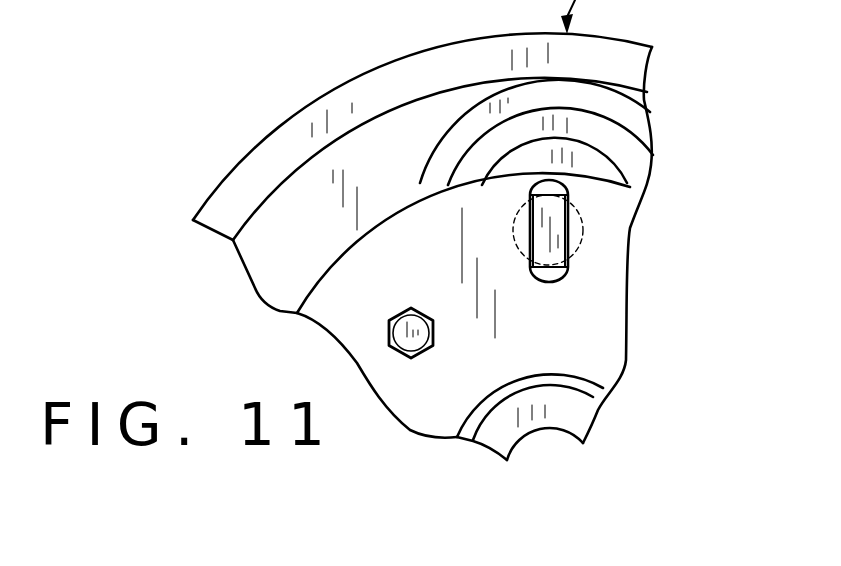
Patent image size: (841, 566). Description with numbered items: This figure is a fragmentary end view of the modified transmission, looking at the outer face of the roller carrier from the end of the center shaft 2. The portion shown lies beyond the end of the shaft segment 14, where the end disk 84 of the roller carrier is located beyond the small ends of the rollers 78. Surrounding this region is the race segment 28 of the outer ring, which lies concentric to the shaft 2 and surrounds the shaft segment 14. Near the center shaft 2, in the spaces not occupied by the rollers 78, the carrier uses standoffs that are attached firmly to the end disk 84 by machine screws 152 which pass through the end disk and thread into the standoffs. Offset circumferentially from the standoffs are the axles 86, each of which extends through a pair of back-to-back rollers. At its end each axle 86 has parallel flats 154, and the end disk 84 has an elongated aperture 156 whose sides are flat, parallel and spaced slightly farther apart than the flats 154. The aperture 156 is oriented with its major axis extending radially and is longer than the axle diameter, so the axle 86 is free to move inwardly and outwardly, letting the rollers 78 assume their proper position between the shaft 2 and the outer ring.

The center shaft 2 is at (540, 458).
The shaft segment 14 is at (568, 412).
The race segment 28 is at (628, 63).
The roller 78 is at (622, 117).
The end disk 84 is at (583, 350).
The axle 86 is at (584, 231).
The machine screw 152 is at (397, 350).
The parallel flat 154 is at (528, 232).
The elongated aperture 156 is at (566, 272).